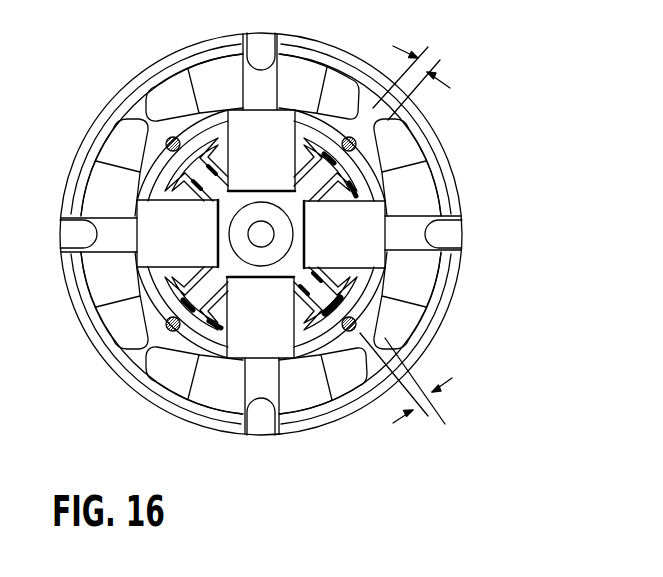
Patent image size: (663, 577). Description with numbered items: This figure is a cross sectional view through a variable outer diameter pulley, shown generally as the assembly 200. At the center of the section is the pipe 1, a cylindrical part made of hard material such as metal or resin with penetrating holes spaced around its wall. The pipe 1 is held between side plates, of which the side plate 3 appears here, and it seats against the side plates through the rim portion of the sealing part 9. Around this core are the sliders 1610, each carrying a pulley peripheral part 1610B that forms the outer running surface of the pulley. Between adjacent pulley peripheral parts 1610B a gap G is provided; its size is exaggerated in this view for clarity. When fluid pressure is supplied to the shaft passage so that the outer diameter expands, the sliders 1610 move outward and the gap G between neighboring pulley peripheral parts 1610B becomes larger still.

The motor 200 is at (128, 64).
The pipe 1 is at (170, 176).
The side plate 3 is at (461, 196).
The sealing part 9 is at (380, 279).
The slider 1610 is at (351, 100).
The pulley peripheral part 1610B is at (351, 100).
The gap G is at (407, 236).